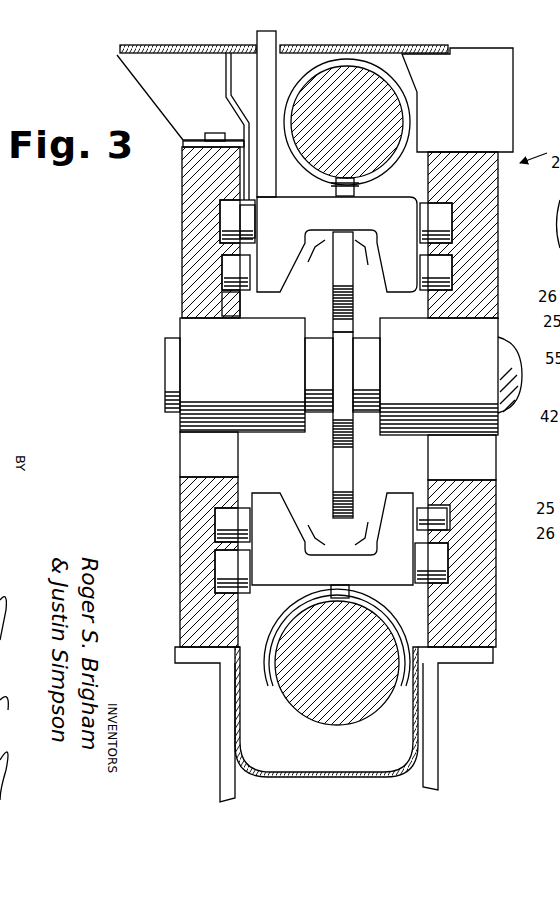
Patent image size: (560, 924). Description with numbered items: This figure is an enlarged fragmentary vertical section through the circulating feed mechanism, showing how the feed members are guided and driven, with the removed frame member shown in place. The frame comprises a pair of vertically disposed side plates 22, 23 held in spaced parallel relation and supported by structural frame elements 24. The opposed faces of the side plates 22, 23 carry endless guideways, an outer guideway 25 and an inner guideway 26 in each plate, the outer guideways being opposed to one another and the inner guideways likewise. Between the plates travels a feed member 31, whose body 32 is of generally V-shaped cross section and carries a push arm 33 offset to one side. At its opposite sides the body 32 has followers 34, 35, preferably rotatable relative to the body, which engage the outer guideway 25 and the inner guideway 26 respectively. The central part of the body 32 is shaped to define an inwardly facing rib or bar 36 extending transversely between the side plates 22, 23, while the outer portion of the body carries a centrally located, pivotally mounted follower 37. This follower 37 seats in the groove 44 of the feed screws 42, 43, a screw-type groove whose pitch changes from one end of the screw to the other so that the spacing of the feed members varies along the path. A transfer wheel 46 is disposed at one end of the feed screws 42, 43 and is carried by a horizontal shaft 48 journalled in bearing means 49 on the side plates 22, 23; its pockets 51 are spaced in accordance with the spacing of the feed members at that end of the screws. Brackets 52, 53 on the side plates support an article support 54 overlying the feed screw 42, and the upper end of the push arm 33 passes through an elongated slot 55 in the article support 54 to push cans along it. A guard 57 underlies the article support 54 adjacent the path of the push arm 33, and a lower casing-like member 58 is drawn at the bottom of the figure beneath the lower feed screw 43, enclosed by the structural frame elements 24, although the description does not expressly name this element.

The side plate 22 is at (190, 223).
The side plate 23 is at (492, 229).
The structural frame elements 24 is at (223, 728).
The outer guideway 25 is at (216, 231).
The inner guideway 26 is at (217, 269).
The feed member 31 is at (283, 196).
The body 32 is at (270, 280).
The push arm 33 is at (277, 38).
The follower 34 is at (222, 213).
The follower 35 is at (230, 300).
The inwardly facing rib or bar 36 is at (327, 240).
The centrally located follower 37 is at (365, 181).
The feed screw 42 is at (405, 108).
The feed screw 43 is at (360, 712).
The groove 44 is at (350, 603).
The transfer wheel 46 is at (335, 460).
The horizontal shaft 48 is at (503, 346).
The bearing means 49 is at (275, 422).
The pockets 51 is at (360, 248).
The bracket 52 is at (130, 63).
The bracket 53 is at (505, 97).
The article support 54 is at (367, 46).
The elongated slot 55 is at (250, 44).
The guard 57 is at (226, 90).
The cup 58 is at (290, 778).